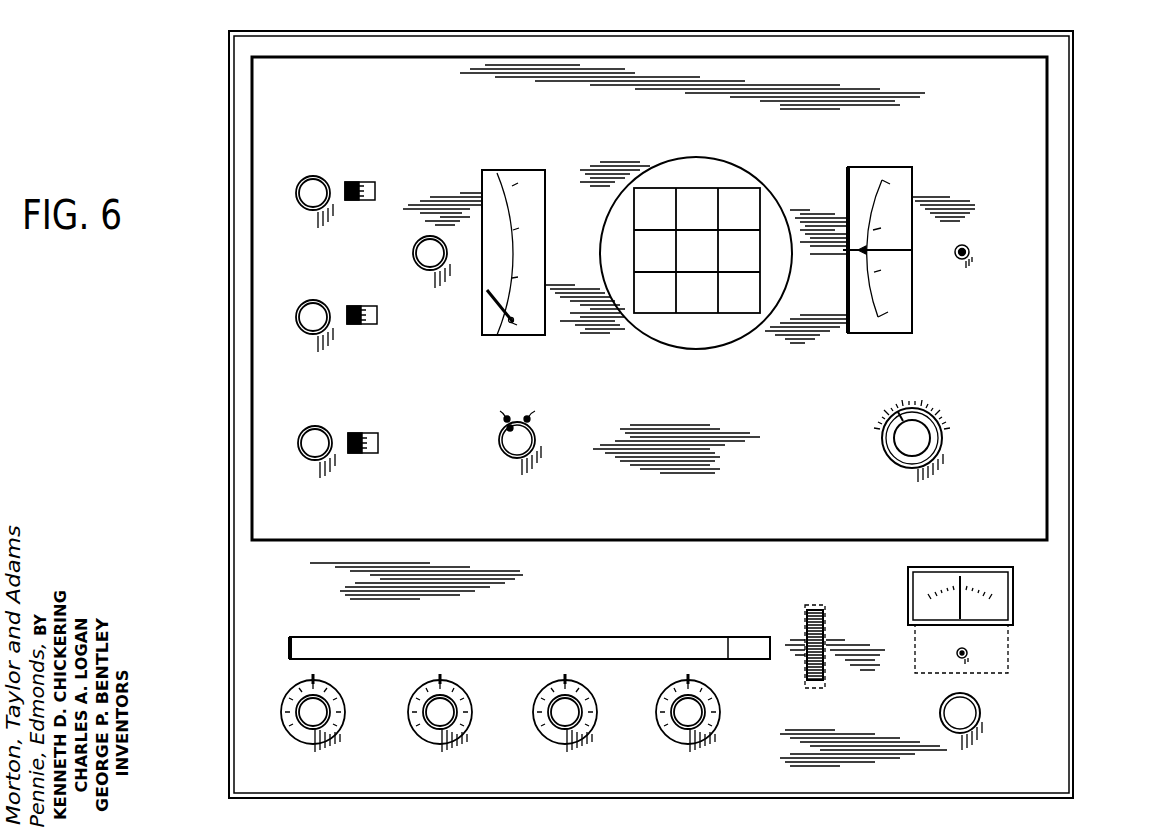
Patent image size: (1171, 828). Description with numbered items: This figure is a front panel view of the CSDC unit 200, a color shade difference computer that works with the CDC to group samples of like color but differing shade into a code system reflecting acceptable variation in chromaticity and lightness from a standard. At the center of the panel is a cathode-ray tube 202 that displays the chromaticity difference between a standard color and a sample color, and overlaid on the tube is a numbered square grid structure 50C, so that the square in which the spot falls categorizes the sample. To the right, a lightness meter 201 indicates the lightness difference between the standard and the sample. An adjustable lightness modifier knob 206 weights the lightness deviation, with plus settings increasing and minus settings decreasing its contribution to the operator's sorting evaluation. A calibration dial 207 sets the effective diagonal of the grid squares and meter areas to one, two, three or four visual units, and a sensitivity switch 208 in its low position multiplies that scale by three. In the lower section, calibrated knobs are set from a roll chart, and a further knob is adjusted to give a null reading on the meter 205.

The CSDC unit 200 is at (684, 414).
The lightness meter 201 is at (903, 197).
The cathode-ray tube 202 is at (698, 231).
The square grid structure 50C is at (736, 190).
The meter 205 is at (928, 583).
The lightness modifier knob 206 is at (888, 444).
The calibration dial 207 is at (490, 284).
The sensitivity switch 208 is at (504, 445).